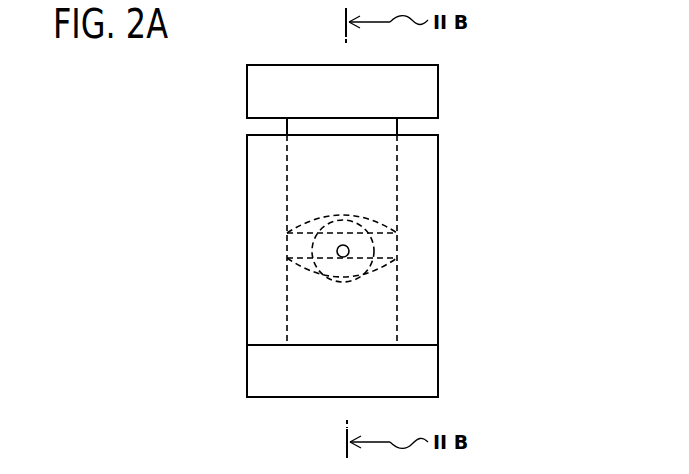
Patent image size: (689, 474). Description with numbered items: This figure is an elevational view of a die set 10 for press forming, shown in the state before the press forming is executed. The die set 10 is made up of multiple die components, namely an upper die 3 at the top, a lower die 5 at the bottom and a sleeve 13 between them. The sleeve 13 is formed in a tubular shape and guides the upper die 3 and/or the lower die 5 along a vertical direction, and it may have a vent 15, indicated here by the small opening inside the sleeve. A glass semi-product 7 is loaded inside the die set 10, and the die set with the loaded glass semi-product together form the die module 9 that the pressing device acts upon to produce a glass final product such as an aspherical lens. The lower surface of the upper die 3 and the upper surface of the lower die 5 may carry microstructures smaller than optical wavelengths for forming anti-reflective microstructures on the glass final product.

The upper die 3 is at (438, 92).
The lower die 5 is at (438, 368).
The glass semi-product 7 is at (374, 247).
The die module 9 is at (440, 297).
The die set 10 is at (489, 215).
The sleeve 13 is at (247, 252).
The vent 15 is at (347, 245).